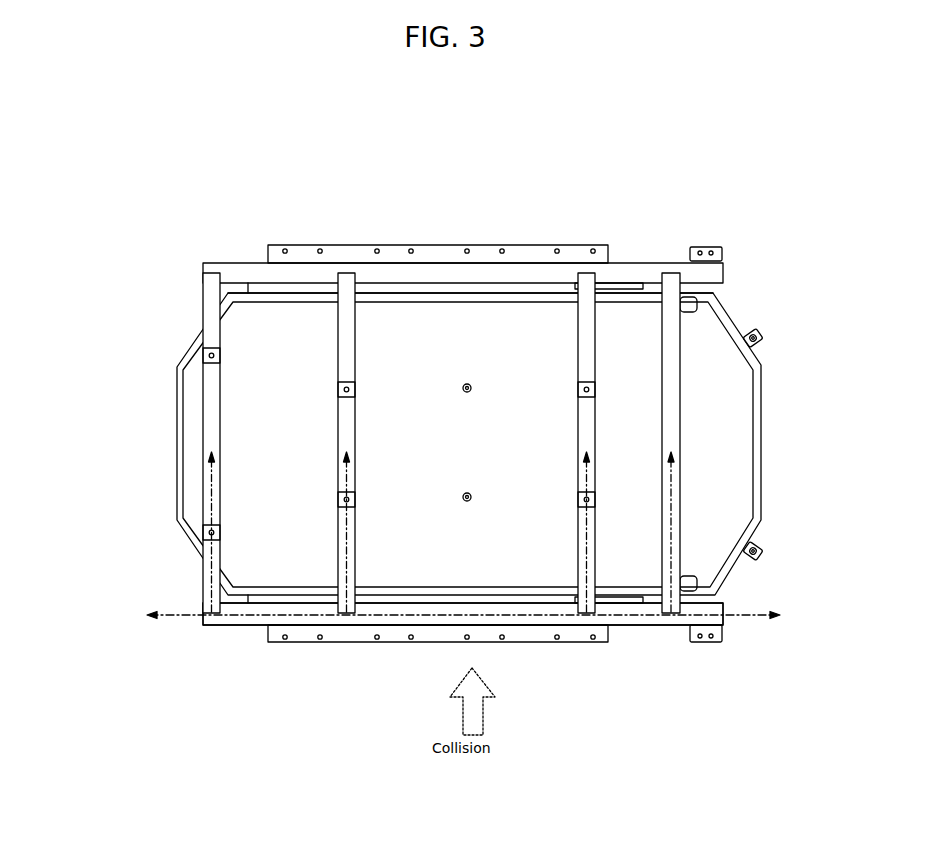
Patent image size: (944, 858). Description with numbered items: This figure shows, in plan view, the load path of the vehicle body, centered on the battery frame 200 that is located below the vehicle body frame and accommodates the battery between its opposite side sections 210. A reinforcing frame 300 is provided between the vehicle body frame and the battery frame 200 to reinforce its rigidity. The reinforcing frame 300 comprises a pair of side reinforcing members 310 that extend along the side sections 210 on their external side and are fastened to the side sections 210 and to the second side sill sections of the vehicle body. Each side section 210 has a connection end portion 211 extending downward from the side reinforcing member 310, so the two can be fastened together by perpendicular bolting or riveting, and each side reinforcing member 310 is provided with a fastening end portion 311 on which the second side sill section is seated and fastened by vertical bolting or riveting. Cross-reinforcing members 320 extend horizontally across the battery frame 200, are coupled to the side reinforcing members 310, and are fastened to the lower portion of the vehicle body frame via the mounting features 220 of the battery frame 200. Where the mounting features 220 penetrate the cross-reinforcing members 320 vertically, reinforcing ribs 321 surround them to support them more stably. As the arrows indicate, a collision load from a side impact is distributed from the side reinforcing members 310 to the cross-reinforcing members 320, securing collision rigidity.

The battery frame 200 is at (765, 457).
The side section 210 is at (396, 290).
The connection end portion 211 is at (517, 288).
The mounting feature 220 is at (467, 383).
The reinforcing frame 300 is at (593, 245).
The side reinforcing member 310 is at (537, 622).
The fastening end portion 311 is at (437, 625).
The cross-reinforcing member 320 is at (347, 323).
The reinforcing rib 321 is at (344, 399).